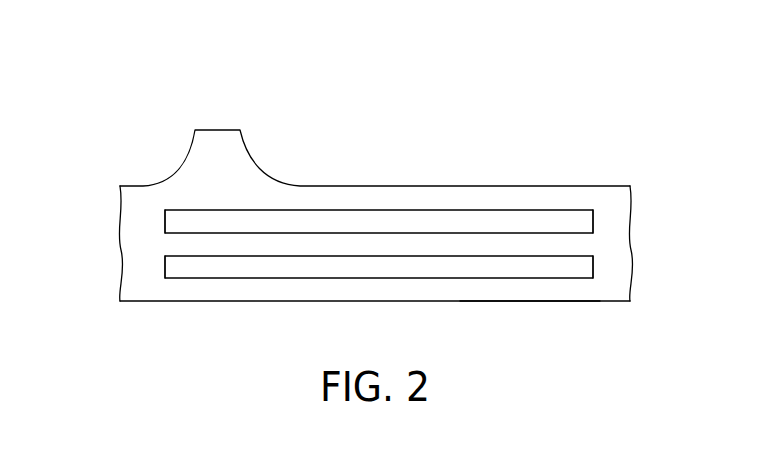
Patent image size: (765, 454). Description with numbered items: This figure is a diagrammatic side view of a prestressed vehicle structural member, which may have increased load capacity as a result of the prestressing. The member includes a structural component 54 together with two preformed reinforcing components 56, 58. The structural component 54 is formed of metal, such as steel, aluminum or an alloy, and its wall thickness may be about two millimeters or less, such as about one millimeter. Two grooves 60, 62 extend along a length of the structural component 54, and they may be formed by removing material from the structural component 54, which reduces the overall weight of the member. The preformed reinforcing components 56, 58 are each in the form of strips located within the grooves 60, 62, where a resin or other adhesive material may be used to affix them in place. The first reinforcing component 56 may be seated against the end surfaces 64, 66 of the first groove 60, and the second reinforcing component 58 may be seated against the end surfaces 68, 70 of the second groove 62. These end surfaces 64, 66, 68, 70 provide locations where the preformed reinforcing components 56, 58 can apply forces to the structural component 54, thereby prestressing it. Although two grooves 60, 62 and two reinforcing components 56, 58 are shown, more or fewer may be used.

The structural component 54 is at (530, 187).
The preformed reinforcing component 56 is at (348, 218).
The preformed reinforcing component 58 is at (330, 265).
The groove 60 is at (608, 117).
The groove 62 is at (525, 280).
The end surface 64 is at (165, 223).
The end surface 66 is at (593, 222).
The end surface 68 is at (165, 270).
The end surface 70 is at (593, 268).